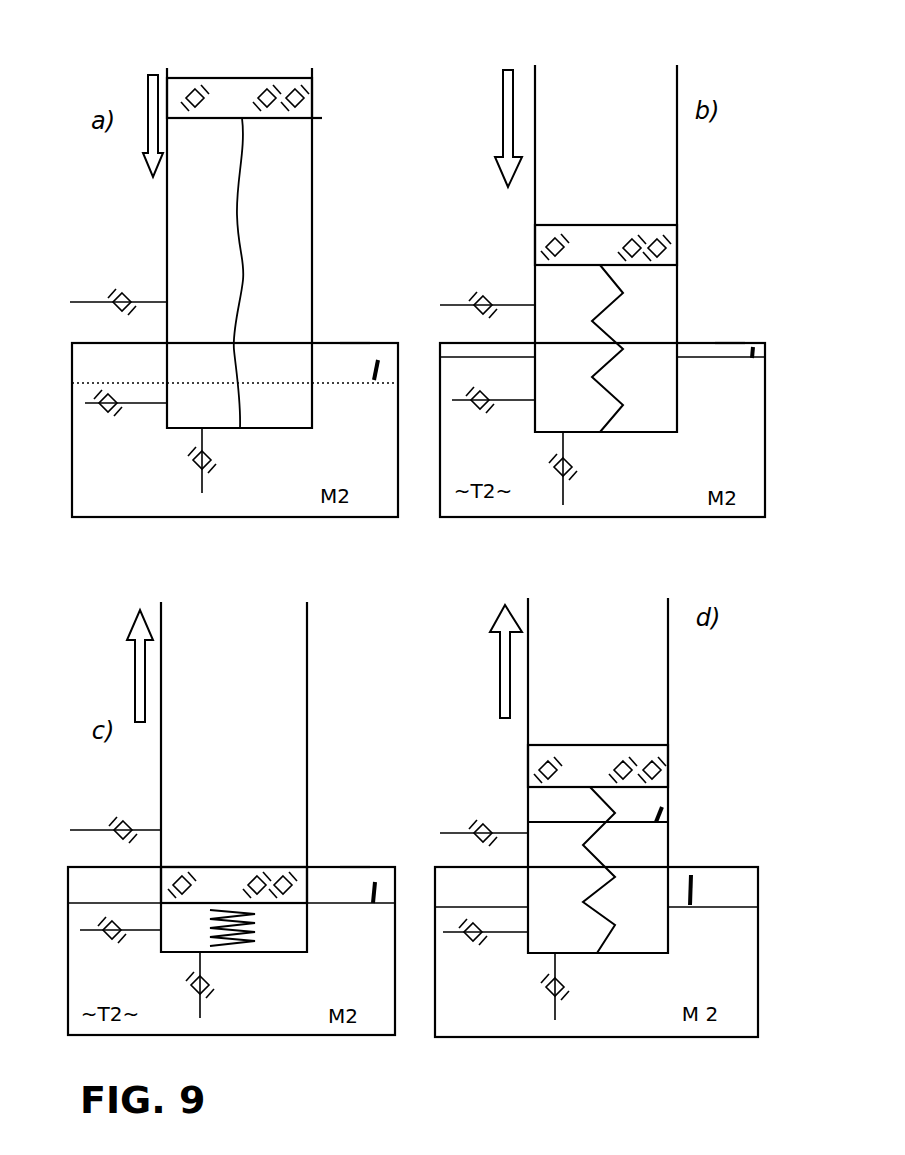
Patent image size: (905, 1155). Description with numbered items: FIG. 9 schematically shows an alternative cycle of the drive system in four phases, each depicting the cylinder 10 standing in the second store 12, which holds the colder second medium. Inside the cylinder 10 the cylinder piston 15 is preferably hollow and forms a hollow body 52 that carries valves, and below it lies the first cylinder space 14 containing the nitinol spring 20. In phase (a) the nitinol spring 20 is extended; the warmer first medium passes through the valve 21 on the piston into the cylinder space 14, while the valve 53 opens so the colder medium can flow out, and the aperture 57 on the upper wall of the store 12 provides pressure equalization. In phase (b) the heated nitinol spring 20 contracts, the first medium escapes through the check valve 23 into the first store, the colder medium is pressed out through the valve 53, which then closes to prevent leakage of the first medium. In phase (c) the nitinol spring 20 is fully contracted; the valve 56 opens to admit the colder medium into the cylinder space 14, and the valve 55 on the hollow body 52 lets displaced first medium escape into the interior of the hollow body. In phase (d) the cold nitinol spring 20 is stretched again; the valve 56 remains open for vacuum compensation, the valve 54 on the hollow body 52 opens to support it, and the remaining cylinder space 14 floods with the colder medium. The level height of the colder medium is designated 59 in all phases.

The cylinder 10 is at (167, 225).
The second store 12 is at (313, 517).
The first cylinder space 14 is at (280, 232).
The cylinder piston 15 is at (243, 78).
The nitinol spring 20 is at (245, 277).
The valve 21 is at (206, 85).
The further valve 23 is at (122, 292).
The hollow body 52 is at (460, 461).
The valve 53 is at (192, 462).
The valve 54 is at (306, 106).
The valve 55 is at (262, 120).
The valve 56 is at (97, 412).
The aperture 57 is at (356, 343).
The level height of medium M2 59 is at (379, 358).